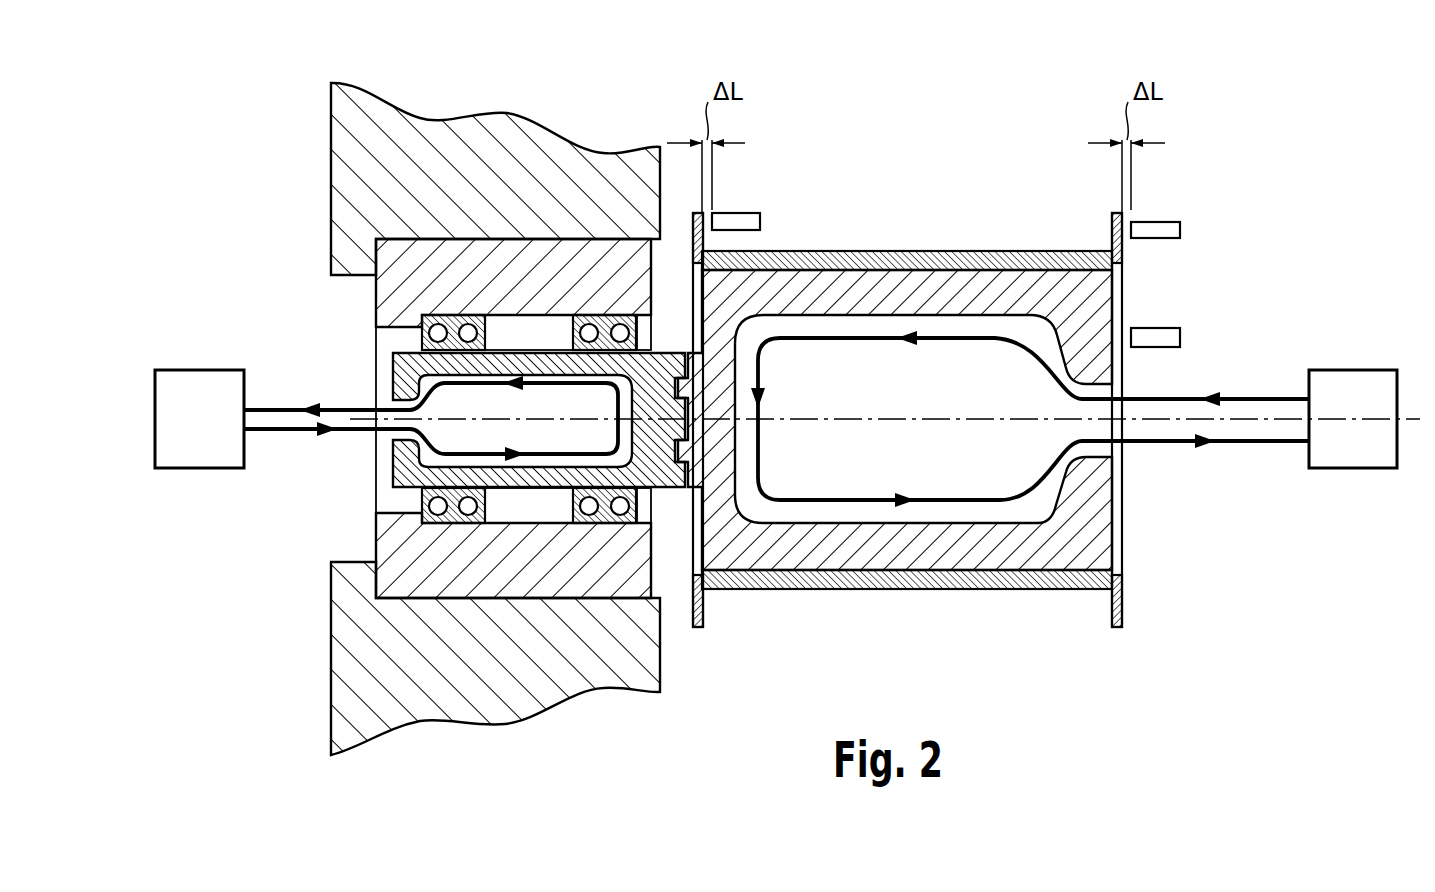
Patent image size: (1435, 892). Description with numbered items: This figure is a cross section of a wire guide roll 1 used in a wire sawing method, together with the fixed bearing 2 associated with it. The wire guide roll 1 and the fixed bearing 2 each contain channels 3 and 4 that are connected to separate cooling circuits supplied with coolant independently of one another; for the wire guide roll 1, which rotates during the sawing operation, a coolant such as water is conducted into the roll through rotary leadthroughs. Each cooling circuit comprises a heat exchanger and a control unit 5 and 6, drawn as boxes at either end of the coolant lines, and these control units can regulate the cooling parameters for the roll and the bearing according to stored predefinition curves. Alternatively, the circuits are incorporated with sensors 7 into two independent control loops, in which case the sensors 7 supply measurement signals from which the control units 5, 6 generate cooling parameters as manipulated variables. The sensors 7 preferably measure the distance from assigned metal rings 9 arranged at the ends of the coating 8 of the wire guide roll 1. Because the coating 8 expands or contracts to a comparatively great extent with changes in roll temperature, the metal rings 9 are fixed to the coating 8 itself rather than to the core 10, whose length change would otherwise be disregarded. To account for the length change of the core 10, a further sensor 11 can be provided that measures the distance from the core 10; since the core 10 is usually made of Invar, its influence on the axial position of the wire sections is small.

The wire guide roll 1 is at (836, 283).
The fixed bearing 2 is at (526, 328).
The channel 3 is at (1049, 465).
The channel 4 is at (418, 443).
The control unit 5 is at (1358, 458).
The control unit 6 is at (204, 456).
The sensor 7 is at (741, 224).
The coating 8 is at (940, 256).
The metal ring 9 is at (703, 608).
The core 10 is at (1122, 304).
The further sensor 11 is at (1170, 337).